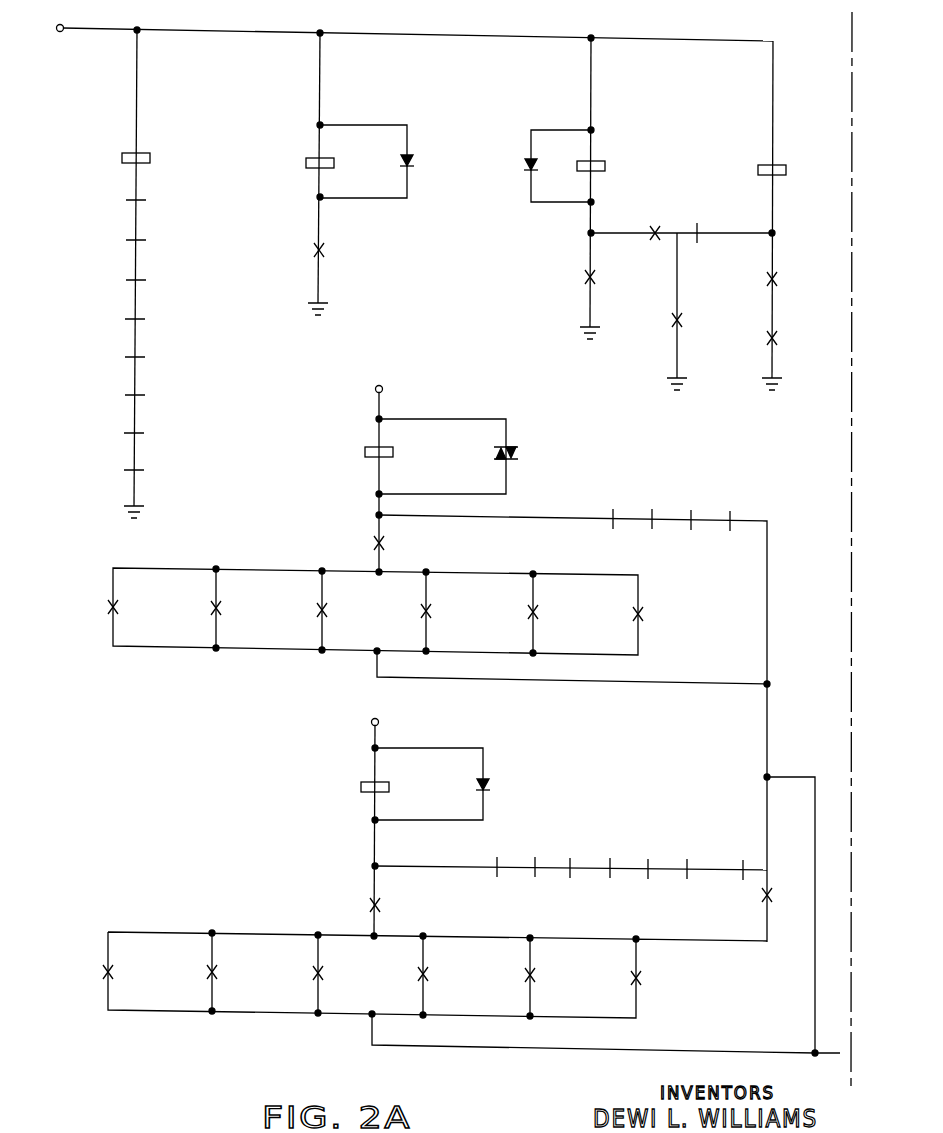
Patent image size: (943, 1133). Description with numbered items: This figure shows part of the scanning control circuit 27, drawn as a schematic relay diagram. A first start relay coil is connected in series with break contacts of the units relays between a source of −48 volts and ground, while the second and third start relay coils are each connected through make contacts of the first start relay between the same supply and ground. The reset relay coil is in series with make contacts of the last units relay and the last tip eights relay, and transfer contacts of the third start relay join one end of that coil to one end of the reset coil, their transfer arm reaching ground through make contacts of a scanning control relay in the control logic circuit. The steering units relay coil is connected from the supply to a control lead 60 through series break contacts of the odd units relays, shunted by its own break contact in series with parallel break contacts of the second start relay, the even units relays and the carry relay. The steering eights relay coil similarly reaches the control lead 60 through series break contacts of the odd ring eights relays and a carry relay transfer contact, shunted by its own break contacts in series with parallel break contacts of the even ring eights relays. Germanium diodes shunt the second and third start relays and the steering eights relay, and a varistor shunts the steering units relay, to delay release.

The scanning control circuit 27 is at (463, 547).
The control lead 60 is at (776, 1052).
The -48V supply terminal 48 is at (411, 23).